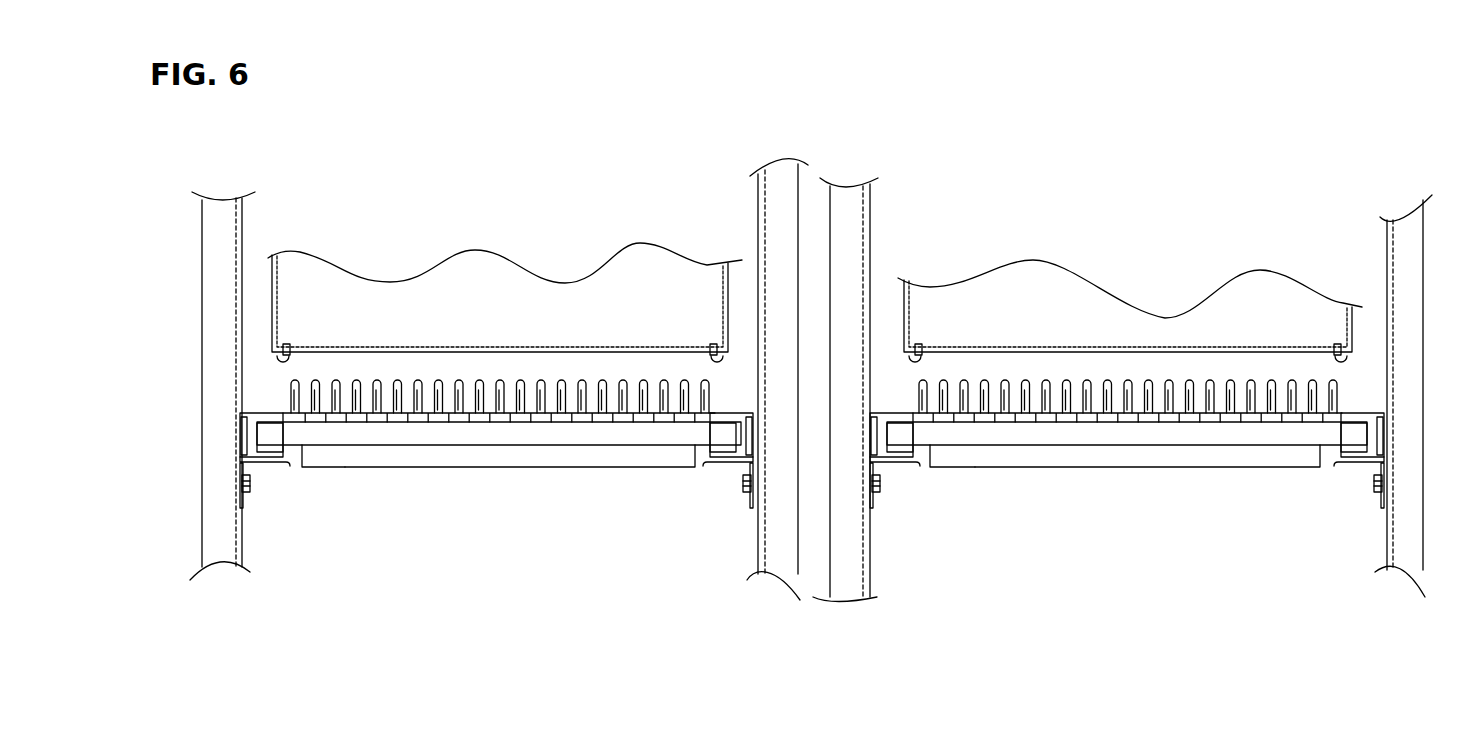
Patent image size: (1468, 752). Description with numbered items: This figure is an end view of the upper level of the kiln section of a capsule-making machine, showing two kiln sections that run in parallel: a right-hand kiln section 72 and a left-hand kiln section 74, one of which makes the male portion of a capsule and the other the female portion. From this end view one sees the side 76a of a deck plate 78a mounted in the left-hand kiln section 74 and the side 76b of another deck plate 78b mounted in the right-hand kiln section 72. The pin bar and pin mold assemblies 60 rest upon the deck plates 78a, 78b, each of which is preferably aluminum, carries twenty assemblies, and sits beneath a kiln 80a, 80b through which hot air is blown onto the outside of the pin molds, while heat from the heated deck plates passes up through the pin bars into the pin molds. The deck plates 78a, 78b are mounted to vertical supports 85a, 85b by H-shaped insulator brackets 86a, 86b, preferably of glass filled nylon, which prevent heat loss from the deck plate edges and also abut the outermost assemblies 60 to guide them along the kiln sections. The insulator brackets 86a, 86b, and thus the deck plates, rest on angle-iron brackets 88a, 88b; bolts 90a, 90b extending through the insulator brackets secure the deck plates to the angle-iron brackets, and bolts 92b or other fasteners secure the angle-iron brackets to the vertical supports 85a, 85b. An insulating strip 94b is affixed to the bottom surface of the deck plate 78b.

The pin bar and pin mold assembly 60 is at (378, 373).
The right-hand kiln section 72 is at (1163, 165).
The left-hand kiln section 74 is at (458, 166).
The side of deck plate 76a is at (399, 444).
The side of deck plate 76b is at (1024, 444).
The deck plate 78a is at (331, 447).
The deck plate 78b is at (1049, 447).
The kiln 80a is at (582, 290).
The kiln 80b is at (1190, 325).
The vertical support 85a is at (212, 392).
The vertical support 85b is at (853, 567).
The H-shaped insulator bracket 86a is at (254, 457).
The H-shaped insulator bracket 86b is at (880, 467).
The angle-iron bracket 88a is at (233, 490).
The angle-iron bracket 88b is at (873, 507).
The bolt 90a is at (268, 465).
The bolt 90b is at (888, 470).
The bolt 92b is at (242, 485).
The strip 94b is at (568, 460).